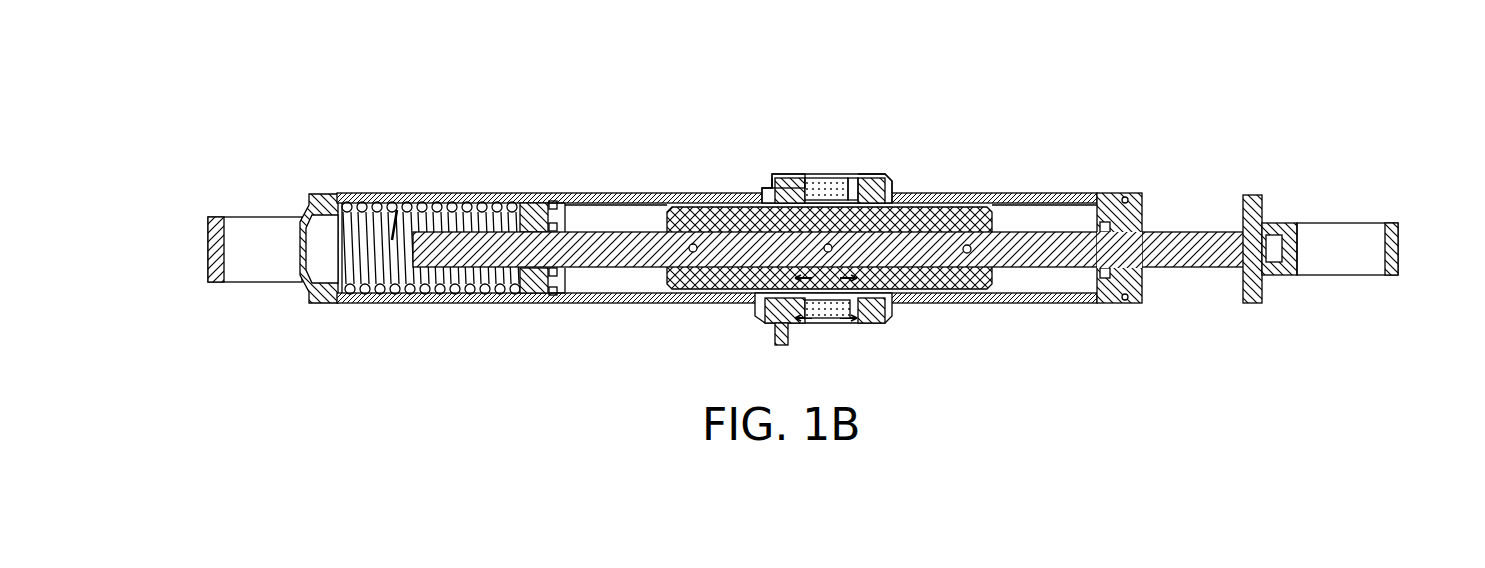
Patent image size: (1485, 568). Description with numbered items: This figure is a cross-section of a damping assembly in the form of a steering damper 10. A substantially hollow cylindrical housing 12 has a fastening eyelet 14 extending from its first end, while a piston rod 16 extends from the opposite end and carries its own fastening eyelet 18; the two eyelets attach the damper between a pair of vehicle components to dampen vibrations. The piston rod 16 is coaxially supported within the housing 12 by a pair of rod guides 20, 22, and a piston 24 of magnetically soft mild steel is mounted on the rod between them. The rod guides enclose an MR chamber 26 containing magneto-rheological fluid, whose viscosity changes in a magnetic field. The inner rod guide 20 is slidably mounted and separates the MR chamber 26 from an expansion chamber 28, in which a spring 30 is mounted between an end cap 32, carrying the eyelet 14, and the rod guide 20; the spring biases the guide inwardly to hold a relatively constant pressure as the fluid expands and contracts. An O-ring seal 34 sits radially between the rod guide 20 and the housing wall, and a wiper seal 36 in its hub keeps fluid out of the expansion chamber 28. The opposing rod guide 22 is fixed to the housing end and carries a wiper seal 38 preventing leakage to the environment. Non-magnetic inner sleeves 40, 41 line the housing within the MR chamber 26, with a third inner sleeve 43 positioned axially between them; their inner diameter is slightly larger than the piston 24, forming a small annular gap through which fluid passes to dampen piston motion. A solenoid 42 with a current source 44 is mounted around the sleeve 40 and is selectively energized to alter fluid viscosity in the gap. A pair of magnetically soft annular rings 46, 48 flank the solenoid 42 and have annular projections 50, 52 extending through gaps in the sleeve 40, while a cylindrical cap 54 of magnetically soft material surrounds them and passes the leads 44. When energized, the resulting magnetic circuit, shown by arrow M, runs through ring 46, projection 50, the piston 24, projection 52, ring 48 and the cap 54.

The steering damper 10 is at (1043, 88).
The cylindrical housing 12 is at (492, 195).
The fastening eyelet 14 is at (215, 213).
The piston rod 16 is at (1180, 230).
The fastening eyelet 18 is at (1386, 222).
The inner rod guide 20 is at (525, 300).
The rod guide 22 is at (1150, 285).
The piston 24 is at (950, 198).
The MR chamber 26 is at (622, 302).
The expansion chamber 28 is at (397, 208).
The spring 30 is at (373, 298).
The end cap 32 is at (305, 296).
The O-ring seal 34 is at (553, 200).
The wiper seal 36 is at (565, 302).
The wiper seal 38 is at (1105, 195).
The inner sleeve 40 is at (636, 208).
The inner sleeve 41 is at (1035, 200).
The solenoid 42 is at (822, 180).
The third inner sleeve 43 is at (828, 182).
The current source 44 is at (783, 340).
The annular ring 46 is at (868, 185).
The annular ring 48 is at (795, 182).
The annular projection 50 is at (895, 180).
The annular projection 52 is at (765, 185).
The cylindrical cap 54 is at (880, 325).
The magnetic circuit arrow M is at (828, 322).